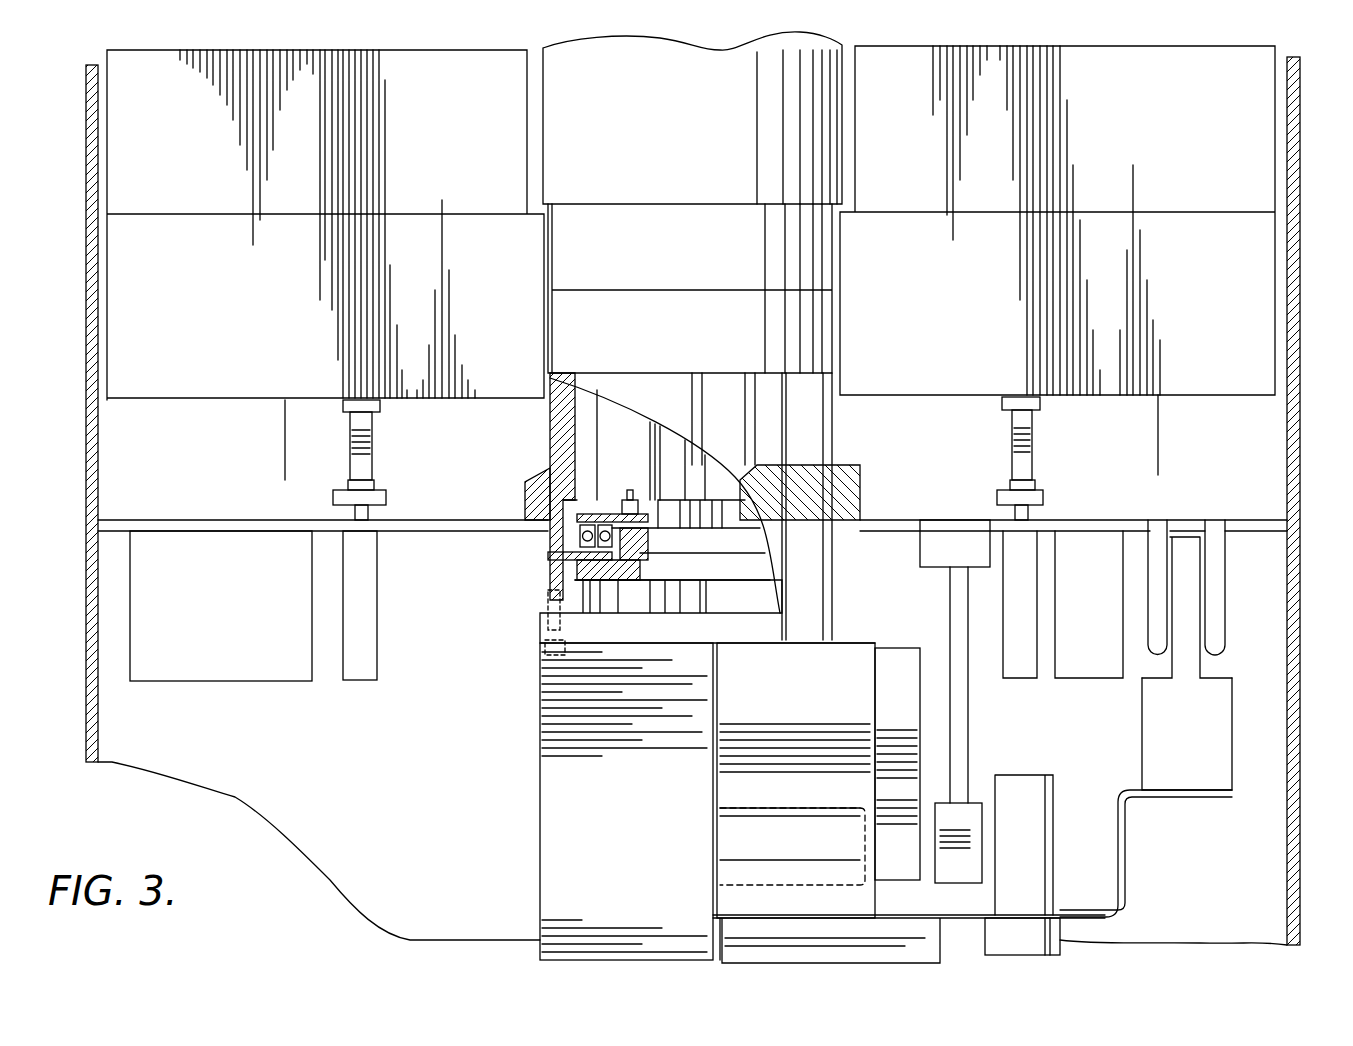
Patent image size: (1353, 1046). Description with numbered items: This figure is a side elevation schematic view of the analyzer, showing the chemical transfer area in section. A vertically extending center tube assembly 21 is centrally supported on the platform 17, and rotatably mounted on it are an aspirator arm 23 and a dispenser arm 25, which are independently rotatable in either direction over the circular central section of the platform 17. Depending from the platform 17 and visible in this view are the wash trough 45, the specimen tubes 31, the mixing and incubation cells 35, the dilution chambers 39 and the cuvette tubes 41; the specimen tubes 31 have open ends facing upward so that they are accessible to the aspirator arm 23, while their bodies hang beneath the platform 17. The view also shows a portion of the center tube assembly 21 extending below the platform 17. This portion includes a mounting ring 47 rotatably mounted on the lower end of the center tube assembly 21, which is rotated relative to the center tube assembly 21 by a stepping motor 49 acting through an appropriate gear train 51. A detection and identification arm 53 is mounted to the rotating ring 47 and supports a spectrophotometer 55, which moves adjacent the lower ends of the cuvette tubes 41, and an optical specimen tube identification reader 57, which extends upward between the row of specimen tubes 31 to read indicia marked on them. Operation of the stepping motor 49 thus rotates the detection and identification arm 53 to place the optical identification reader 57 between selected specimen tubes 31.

The platform 17 is at (884, 520).
The center tube assembly 21 is at (572, 103).
The aspirator arm 23 is at (1252, 101).
The dispenser arm 25 is at (132, 101).
The specimen tubes 31 is at (1160, 582).
The mixing and incubation cells 35 is at (233, 620).
The dilution chambers 39 is at (1105, 614).
The cuvette tubes 41 is at (957, 603).
The wash trough 45 is at (365, 634).
The mounting ring 47 is at (556, 585).
The stepping motor 49 is at (645, 436).
The gear train 51 is at (590, 505).
The detection and identification arm 53 is at (1122, 868).
The spectrophotometer 55 is at (558, 808).
The optical specimen tube identification reader 57 is at (1200, 750).